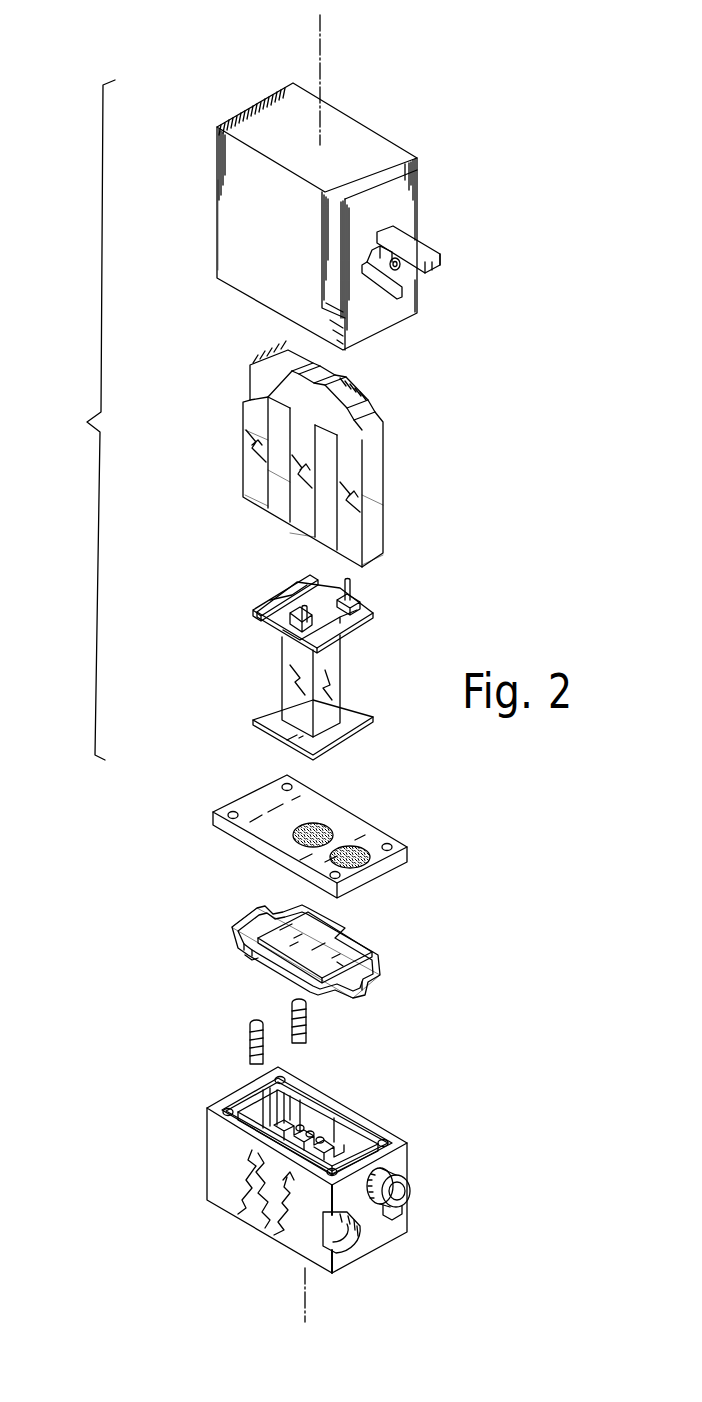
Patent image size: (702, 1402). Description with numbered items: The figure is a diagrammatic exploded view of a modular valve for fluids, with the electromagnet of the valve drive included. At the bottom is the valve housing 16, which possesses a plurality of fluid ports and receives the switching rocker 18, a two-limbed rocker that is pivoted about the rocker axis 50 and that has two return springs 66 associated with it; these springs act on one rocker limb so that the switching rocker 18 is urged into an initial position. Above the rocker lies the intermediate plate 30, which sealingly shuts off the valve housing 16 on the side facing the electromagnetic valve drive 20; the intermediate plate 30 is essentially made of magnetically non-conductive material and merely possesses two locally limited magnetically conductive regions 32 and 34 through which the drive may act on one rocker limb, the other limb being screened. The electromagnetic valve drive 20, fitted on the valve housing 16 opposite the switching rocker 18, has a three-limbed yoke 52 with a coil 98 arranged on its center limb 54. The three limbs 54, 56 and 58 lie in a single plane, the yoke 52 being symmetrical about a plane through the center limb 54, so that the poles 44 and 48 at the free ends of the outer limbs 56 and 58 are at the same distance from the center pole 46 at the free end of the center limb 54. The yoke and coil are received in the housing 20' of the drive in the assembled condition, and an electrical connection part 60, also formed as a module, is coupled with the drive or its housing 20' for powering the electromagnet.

The valve housing 16 is at (382, 1235).
The switching rocker 18 is at (234, 926).
The electromagnetic valve drive 20 is at (86, 420).
The housing 20' is at (194, 220).
The intermediate plate 30 is at (310, 825).
The magnetically conductive region 32 is at (333, 830).
The magnetically conductive region 34 is at (367, 850).
The pole 44 is at (256, 504).
The center pole 46 is at (308, 535).
The pole 48 is at (371, 562).
The axis 50 is at (350, 932).
The three-limbed yoke 52 is at (318, 461).
The center limb 54 is at (300, 468).
The outer limb 56 is at (252, 422).
The outer limb 58 is at (380, 493).
The electrical connection part 60 is at (402, 190).
The return springs 66 is at (281, 1006).
The coil 98 is at (315, 667).